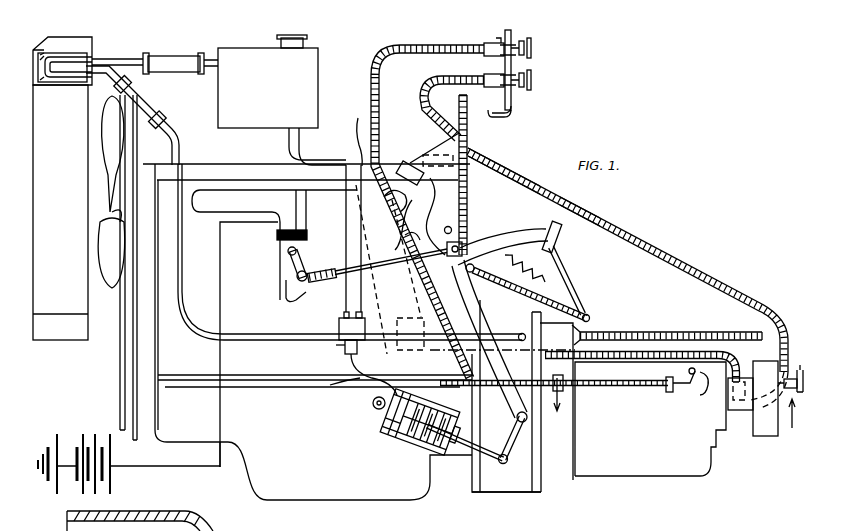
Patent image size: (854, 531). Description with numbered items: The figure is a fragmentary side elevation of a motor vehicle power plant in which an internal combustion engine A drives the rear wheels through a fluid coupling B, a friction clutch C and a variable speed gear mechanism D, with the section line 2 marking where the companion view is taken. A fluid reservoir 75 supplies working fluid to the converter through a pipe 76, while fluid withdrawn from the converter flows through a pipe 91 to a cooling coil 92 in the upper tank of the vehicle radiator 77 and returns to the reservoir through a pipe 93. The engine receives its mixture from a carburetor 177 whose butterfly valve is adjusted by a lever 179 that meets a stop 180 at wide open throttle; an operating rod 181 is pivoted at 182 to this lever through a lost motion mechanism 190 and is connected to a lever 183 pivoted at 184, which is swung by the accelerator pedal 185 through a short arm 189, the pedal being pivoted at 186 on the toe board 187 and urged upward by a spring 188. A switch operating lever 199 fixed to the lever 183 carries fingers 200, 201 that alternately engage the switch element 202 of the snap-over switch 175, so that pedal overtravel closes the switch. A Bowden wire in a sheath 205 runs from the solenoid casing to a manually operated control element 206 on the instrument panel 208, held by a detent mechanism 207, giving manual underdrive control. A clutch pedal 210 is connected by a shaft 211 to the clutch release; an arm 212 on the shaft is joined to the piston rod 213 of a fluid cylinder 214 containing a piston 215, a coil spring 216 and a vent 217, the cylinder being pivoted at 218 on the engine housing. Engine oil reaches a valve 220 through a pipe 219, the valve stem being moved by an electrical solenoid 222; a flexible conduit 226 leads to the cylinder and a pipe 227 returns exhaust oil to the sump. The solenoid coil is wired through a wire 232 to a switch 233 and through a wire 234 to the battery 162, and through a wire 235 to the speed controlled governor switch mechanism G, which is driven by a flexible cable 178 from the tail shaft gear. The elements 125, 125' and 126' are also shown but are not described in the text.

The section line 2 is at (674, 408).
The fluid reservoir 75 is at (286, 88).
The pipe 76 is at (296, 158).
The vehicle radiator 77 is at (64, 208).
The pipe 91 is at (197, 333).
The cooling coil 92 is at (96, 50).
The pipe 93 is at (138, 58).
The control rod 125 is at (574, 392).
The valve handwheel 125' is at (529, 67).
The supply hose 126' is at (427, 203).
The battery 162 is at (112, 483).
The switch 175 is at (404, 163).
The carburetor 177 is at (284, 290).
The flexible cable 178 is at (706, 333).
The lever 179 is at (288, 250).
The stop 180 is at (297, 276).
The operating rod 181 is at (380, 282).
The pivotal connection 182 is at (316, 284).
The lever 183 is at (496, 245).
The pivotal support 184 is at (455, 228).
The accelerator pedal 185 is at (546, 279).
The pivotal support 186 is at (590, 312).
The toe board 187 is at (602, 333).
The spring 188 is at (566, 262).
The short arm 189 is at (525, 228).
The lost motion mechanism 190 is at (334, 251).
The switch operating lever 199 is at (468, 212).
The switch operating finger 200 is at (475, 192).
The switch operating finger 201 is at (370, 275).
The switch element 202 is at (490, 156).
The sheath 205 is at (602, 226).
The manually operated control element 206 is at (534, 83).
The detent mechanism 207 is at (490, 75).
The instrument panel 208 is at (514, 111).
The clutch pedal 210 is at (572, 210).
The shaft 211 is at (518, 420).
The arm 212 is at (503, 465).
The piston rod 213 is at (475, 470).
The fluid cylinder 214 is at (385, 436).
The piston 215 is at (410, 450).
The coil spring 216 is at (435, 455).
The vent 217 is at (458, 400).
The pivotal mounting 218 is at (372, 406).
The pipe 219 is at (336, 345).
The valve 220 is at (330, 386).
The electrical solenoid 222 is at (339, 326).
The flexible conduit 226 is at (375, 378).
The pipe 227 is at (345, 356).
The wire 232 is at (312, 312).
The switch 233 is at (300, 226).
The wire 234 is at (220, 412).
The wire 235 is at (358, 120).
The internal combustion engine A is at (253, 159).
The fluid coupling B is at (512, 493).
The friction clutch C is at (552, 480).
The variable speed gear mechanism D is at (661, 469).
The speed controlled governor switch mechanism G is at (398, 318).